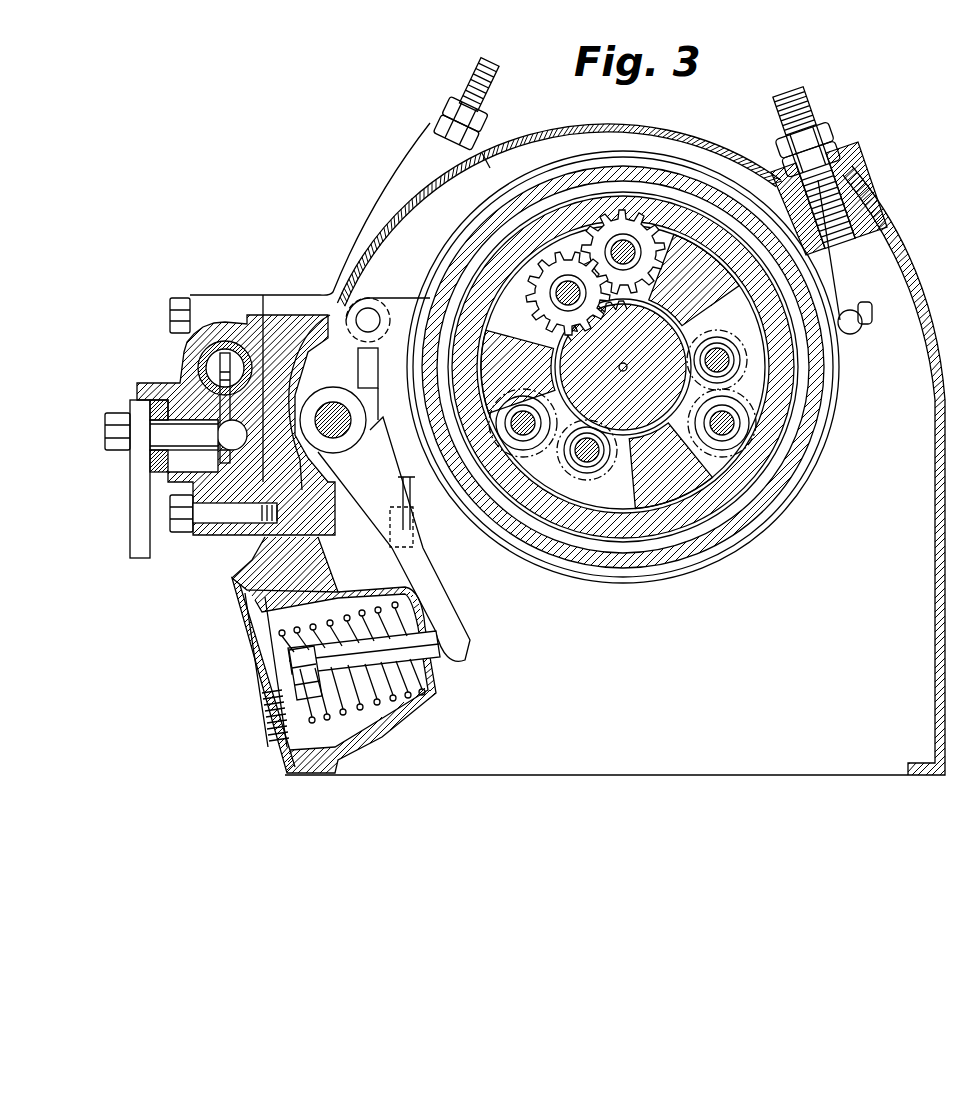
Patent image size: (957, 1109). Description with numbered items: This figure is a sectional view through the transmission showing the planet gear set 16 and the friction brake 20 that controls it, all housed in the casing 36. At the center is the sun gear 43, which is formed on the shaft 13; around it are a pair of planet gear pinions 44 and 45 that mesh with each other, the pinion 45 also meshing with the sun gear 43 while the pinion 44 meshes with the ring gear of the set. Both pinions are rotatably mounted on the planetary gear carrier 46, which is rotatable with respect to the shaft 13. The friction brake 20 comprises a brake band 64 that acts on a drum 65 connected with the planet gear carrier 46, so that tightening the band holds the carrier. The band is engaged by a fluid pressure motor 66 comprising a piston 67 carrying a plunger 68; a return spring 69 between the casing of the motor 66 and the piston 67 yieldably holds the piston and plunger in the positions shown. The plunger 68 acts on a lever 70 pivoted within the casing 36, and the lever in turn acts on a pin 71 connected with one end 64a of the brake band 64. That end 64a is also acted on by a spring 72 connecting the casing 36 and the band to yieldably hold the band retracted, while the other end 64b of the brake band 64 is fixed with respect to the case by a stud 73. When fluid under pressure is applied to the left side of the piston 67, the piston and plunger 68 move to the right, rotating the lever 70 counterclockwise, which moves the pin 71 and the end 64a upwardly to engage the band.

The shaft 13 is at (616, 456).
The planet gear set 16 is at (580, 240).
The friction brake 20 is at (804, 506).
The casing 36 is at (378, 240).
The sun gear 43 is at (623, 367).
The planet gear pinion 44 is at (640, 298).
The planet gear pinion 45 is at (546, 312).
The planetary gear carrier 46 is at (660, 500).
The brake band 64 is at (702, 548).
The end of the brake band 64a is at (425, 314).
The other end of the brake band 64b is at (848, 338).
The drum 65 is at (746, 518).
The fluid pressure motor 66 is at (440, 706).
The piston 67 is at (270, 734).
The plunger 68 is at (441, 646).
The return spring 69 is at (405, 702).
The lever 70 is at (445, 592).
The pin 71 is at (362, 357).
The spring 72 is at (413, 515).
The stud 73 is at (808, 122).